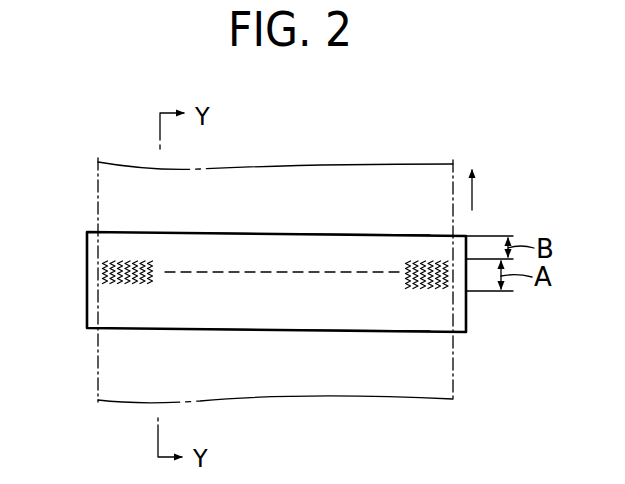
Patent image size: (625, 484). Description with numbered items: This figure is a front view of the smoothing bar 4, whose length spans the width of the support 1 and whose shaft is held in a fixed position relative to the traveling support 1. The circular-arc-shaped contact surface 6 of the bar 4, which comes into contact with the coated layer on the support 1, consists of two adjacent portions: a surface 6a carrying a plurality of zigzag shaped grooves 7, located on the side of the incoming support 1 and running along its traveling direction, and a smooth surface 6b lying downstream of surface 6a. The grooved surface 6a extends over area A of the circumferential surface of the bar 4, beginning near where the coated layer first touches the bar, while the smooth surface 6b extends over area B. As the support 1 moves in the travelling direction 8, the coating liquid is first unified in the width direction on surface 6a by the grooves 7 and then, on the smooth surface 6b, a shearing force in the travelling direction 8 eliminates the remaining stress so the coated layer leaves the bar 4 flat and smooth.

The support 1 is at (453, 377).
The smoothing bar 4 is at (470, 336).
The contact surface 6 is at (110, 248).
The surface having grooves 6a is at (300, 278).
The smooth surface 6b is at (306, 245).
The zigzag shaped grooves 7 is at (148, 258).
The travelling direction 8 is at (472, 193).